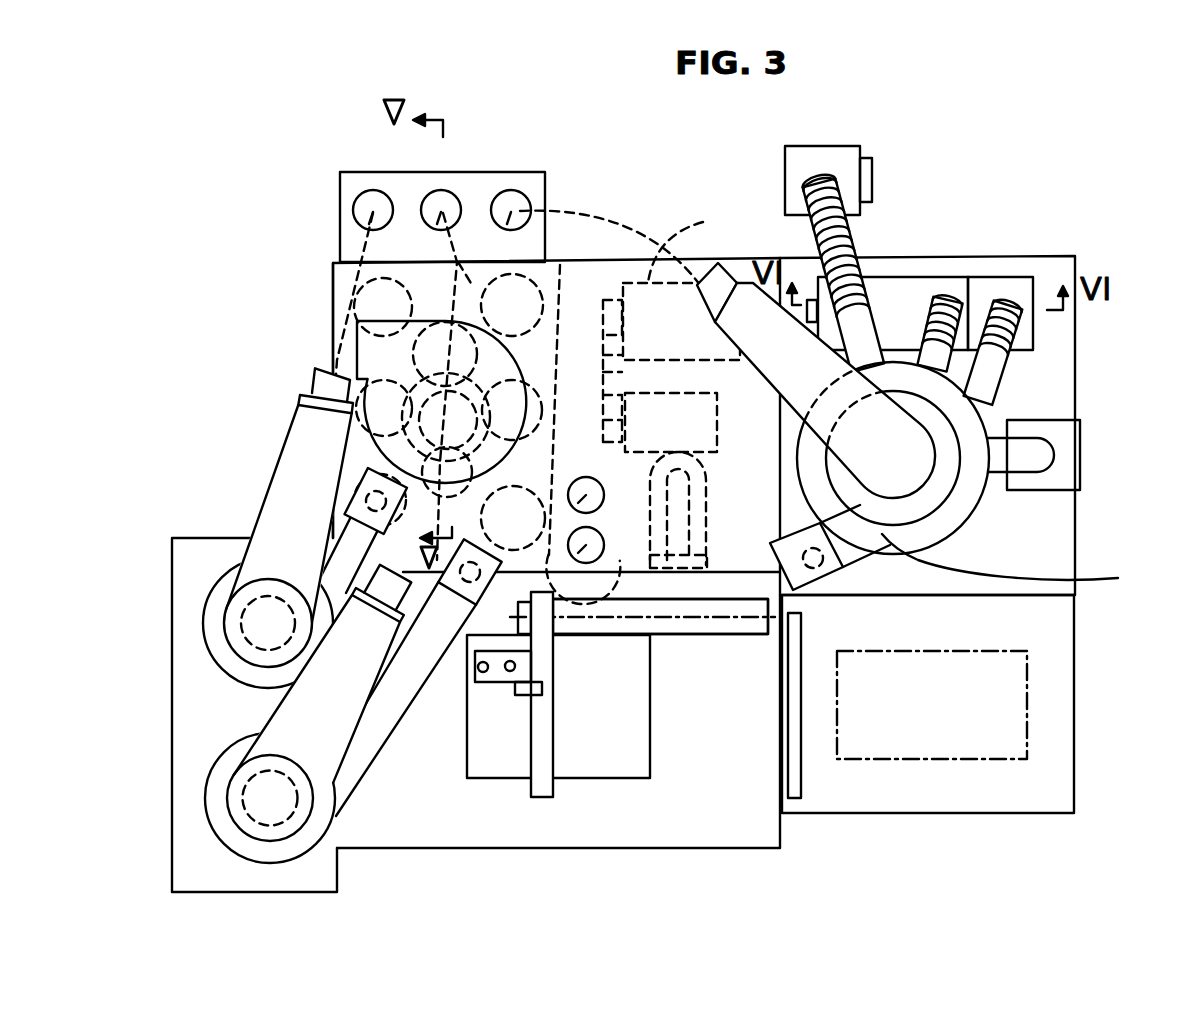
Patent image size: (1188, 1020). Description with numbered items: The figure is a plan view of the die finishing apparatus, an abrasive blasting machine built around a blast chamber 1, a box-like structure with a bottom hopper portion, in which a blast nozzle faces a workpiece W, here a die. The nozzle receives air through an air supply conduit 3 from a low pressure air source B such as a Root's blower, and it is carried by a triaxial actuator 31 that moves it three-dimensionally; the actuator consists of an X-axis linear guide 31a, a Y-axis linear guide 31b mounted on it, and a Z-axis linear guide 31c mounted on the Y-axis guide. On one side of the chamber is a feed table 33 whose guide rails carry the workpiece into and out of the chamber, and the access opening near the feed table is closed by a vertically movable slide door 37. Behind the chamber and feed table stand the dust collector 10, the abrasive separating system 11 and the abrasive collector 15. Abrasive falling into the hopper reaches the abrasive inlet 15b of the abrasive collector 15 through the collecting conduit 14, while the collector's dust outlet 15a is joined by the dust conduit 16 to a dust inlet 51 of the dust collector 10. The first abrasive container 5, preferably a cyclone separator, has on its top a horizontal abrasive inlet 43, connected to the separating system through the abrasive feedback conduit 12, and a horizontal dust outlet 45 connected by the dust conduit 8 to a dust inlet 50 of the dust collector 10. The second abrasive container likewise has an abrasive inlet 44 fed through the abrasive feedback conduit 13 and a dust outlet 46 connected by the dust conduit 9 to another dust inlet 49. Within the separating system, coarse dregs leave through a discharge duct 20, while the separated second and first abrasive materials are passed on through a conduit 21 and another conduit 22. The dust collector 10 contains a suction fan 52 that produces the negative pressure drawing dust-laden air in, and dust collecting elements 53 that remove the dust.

The blast chamber 1 is at (556, 851).
The air supply conduit 3 is at (688, 531).
The first abrasive container 5 is at (207, 804).
The dust conduit 8 is at (473, 268).
The dust conduit 9 is at (345, 240).
The dust collector 10 is at (540, 345).
The abrasive separating system 11 is at (974, 528).
The abrasive feedback conduit 12 is at (607, 520).
The abrasive feedback conduit 13 is at (488, 425).
The collecting conduit 14 is at (830, 570).
The abrasive collector 15 is at (958, 432).
The dust outlet 15a is at (816, 380).
The abrasive inlet 15b is at (1031, 561).
The dust conduit 16 is at (620, 223).
The discharge duct 20 is at (858, 240).
The conduit 21 is at (927, 330).
The conduit 22 is at (985, 360).
The triaxial actuator 31 is at (714, 648).
The X-axis linear guide 31a is at (677, 638).
The Y-axis linear guide 31b is at (553, 713).
The Z-axis linear guide 31c is at (507, 686).
The feed table 33 is at (935, 797).
The slide door 37 is at (803, 636).
The abrasive inlet 43 is at (395, 733).
The abrasive inlet 44 is at (330, 520).
The dust outlet 45 is at (283, 712).
The dust outlet 46 is at (285, 435).
The dust inlet 49 is at (370, 190).
The dust inlet 50 is at (443, 190).
The dust inlet 51 is at (517, 190).
The suction fan 52 is at (517, 377).
The dust collecting elements 53 is at (340, 311).
The low pressure air source B is at (635, 397).
The workpiece W is at (972, 650).